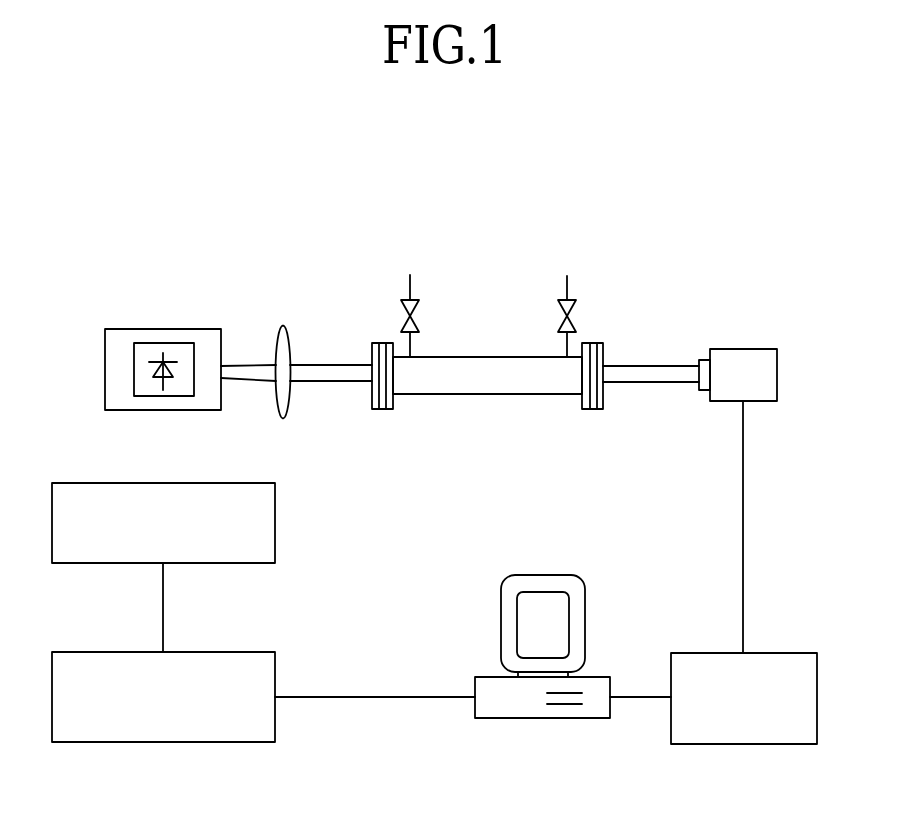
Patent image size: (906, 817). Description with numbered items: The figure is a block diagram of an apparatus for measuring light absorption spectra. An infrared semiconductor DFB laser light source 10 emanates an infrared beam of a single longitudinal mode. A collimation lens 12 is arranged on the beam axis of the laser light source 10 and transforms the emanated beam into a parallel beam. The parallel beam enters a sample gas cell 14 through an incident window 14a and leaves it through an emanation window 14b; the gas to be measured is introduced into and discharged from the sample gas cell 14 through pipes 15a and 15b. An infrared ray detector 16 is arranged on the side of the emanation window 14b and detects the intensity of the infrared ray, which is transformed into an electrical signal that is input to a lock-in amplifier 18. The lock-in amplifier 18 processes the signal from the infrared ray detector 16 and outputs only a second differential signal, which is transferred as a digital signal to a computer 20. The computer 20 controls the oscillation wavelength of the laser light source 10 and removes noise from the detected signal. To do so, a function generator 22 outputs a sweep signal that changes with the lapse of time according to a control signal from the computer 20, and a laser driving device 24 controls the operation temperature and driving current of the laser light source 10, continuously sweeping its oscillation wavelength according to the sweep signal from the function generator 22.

The DFB laser light source 10 is at (202, 329).
The collimation lens 12 is at (289, 332).
The sample gas cell 14 is at (501, 357).
The incident window 14a is at (371, 356).
The emanation window 14b is at (607, 362).
The pipe 15a is at (411, 277).
The pipe 15b is at (566, 290).
The infrared ray detector 16 is at (761, 349).
The lock-in amplifier 18 is at (779, 653).
The computer 20 is at (597, 676).
The function generator 22 is at (263, 652).
The laser driving device 24 is at (268, 483).